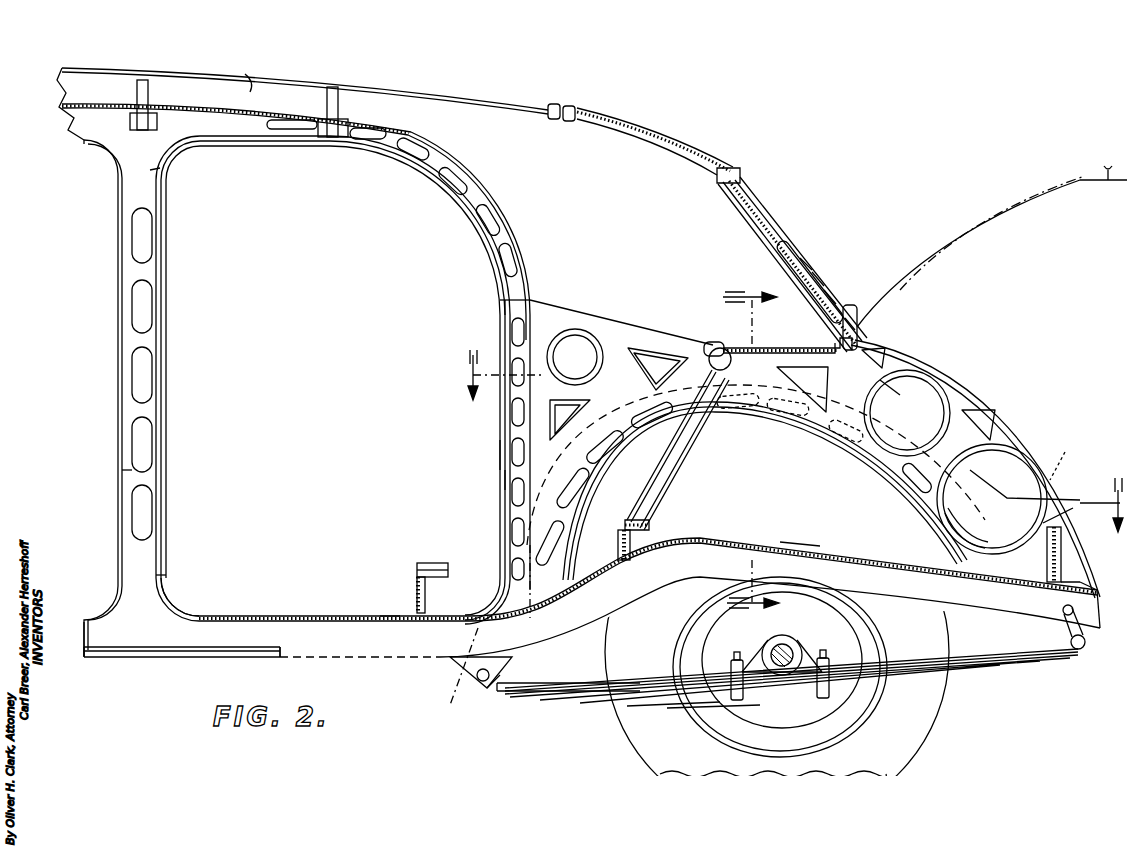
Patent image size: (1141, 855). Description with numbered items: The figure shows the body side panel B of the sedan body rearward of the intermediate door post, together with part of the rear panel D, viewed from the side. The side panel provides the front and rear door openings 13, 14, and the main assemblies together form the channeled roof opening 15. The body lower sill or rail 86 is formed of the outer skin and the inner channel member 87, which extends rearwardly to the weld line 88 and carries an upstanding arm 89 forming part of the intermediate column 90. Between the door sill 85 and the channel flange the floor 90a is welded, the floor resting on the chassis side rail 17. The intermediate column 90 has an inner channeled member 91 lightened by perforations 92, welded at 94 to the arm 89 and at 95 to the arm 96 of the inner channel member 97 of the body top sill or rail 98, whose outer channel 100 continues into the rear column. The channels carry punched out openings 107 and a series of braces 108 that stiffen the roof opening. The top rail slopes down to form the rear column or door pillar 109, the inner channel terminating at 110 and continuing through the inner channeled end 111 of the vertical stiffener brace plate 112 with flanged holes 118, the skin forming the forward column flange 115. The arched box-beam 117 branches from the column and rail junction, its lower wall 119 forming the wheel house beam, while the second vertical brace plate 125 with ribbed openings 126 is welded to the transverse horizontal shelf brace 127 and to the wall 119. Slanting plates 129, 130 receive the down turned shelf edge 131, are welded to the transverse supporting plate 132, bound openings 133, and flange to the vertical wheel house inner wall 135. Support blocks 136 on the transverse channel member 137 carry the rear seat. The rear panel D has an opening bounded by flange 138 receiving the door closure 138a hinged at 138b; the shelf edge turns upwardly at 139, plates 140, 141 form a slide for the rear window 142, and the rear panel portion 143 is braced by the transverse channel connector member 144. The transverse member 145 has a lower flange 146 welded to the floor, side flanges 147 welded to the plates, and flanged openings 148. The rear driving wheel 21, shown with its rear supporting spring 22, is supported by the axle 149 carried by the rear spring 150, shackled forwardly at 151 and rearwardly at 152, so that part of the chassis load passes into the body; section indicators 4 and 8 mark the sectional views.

The front door opening 13 is at (86, 657).
The rear door opening 14 is at (205, 657).
The roof opening 15 is at (528, 104).
The chassis side rail 17 is at (400, 660).
The rear driving ground wheel 21 is at (915, 728).
The rear supporting spring 22 is at (595, 695).
The door sill 85 is at (90, 640).
The body lower sill or rail 86 is at (372, 614).
The inner channel member of lower sill 87 is at (265, 655).
The weld line 88 is at (470, 690).
The upstanding arm 89 is at (145, 612).
The intermediate column 90 is at (160, 300).
The floor 90a is at (262, 616).
The inner channeled member of intermediate column 91 is at (132, 478).
The perforations 92 is at (140, 432).
The weld 94 is at (150, 590).
The weld 95 is at (158, 185).
The arm of top rail inner channel 96 is at (132, 148).
The inner channel member of top rail 97 is at (436, 160).
The body top sill or rail 98 is at (300, 148).
The top rail outer channel 100 is at (270, 105).
The punched out openings 107 is at (456, 185).
The braces 108 is at (148, 88).
The rear column or door pillar 109 is at (494, 290).
The termination of inner channel 110 is at (522, 298).
The inner channeled end of brace plate 111 is at (512, 430).
The vertical stiffener brace plate 112 is at (618, 325).
The forward column flange 115 is at (500, 316).
The box-beam 117 is at (548, 465).
The holes 118 is at (575, 340).
The lower wall of box-beam 119 is at (765, 420).
The second vertical brace plate 125 is at (758, 360).
The ribbed openings 126 is at (925, 380).
The transverse horizontal shelf brace 127 is at (815, 348).
The slanting plate 129 is at (710, 340).
The slanting plate 130 is at (652, 524).
The down turned edge of shelf 131 is at (752, 310).
The transverse supporting plate 132 is at (618, 538).
The openings 133 is at (688, 445).
The vertical wheel house inner wall 135 is at (845, 557).
The support blocks 136 is at (428, 563).
The transverse channel member 137 is at (425, 600).
The flange 138 is at (1000, 428).
The door closure 138a is at (968, 222).
The hinge 138b is at (878, 290).
The upturned rear edge of shelf 139 is at (850, 315).
The plate 140 is at (820, 280).
The plate 141 is at (815, 263).
The rear window 142 is at (750, 195).
The rear panel portion 143 is at (795, 250).
The transverse channel connector member 144 is at (832, 296).
The transverse member 145 is at (1062, 570).
The lower flange of transverse member 146 is at (1040, 555).
The side flanges 147 is at (1025, 498).
The flanged openings 148 is at (1070, 588).
The axle 149 is at (790, 645).
The rear spring 150 is at (990, 668).
The forward shackle 151 is at (478, 690).
The rear shackle 152 is at (1086, 649).
The body side panel B is at (262, 84).
The body rear panel D is at (818, 255).
The section line 4 is at (793, 452).
The section line 8 is at (751, 454).